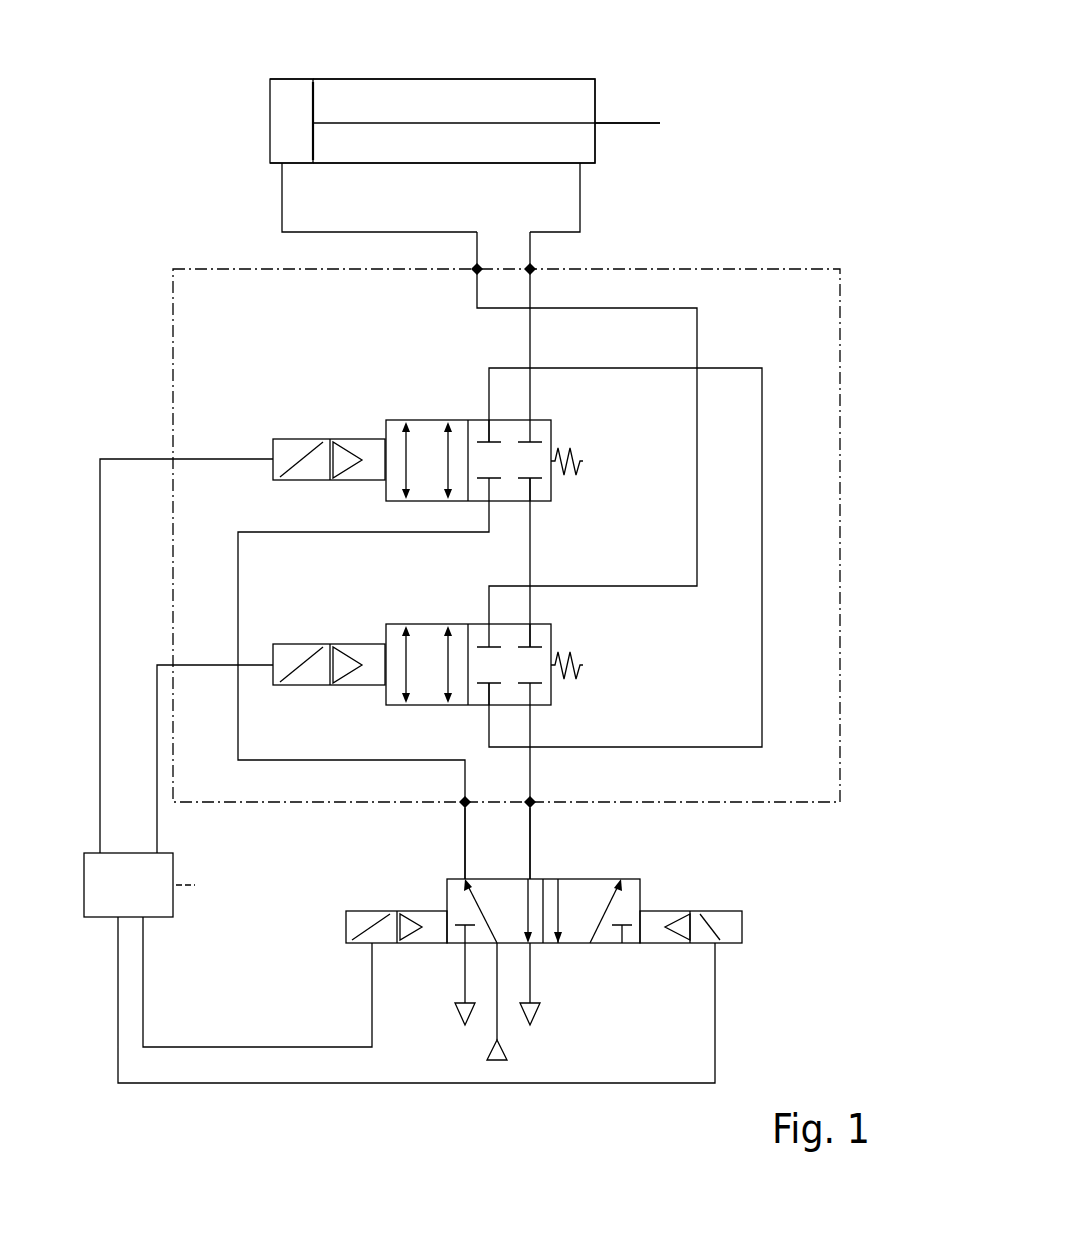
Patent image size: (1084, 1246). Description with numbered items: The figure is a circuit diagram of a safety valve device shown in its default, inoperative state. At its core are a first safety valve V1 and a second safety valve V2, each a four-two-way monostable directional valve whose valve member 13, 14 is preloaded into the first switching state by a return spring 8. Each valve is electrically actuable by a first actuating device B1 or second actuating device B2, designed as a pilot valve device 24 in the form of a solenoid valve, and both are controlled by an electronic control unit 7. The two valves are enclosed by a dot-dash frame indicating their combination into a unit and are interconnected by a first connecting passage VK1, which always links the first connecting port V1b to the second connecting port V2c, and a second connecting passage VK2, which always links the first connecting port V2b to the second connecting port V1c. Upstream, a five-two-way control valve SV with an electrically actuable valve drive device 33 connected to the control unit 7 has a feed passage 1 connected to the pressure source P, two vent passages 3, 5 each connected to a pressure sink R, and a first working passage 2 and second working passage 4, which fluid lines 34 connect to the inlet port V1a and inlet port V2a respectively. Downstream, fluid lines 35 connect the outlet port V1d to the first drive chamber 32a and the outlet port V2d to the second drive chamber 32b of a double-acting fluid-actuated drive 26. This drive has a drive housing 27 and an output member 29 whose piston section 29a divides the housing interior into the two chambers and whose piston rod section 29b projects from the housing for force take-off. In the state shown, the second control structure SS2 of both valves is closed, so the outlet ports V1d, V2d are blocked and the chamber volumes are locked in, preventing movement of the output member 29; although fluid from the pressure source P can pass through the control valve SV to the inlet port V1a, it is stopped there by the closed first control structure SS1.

The fluid-actuated drive 26 is at (570, 73).
The drive housing 27 is at (377, 80).
The output member 29 is at (646, 112).
The piston section 29a is at (308, 107).
The piston rod section 29b is at (618, 125).
The first drive chamber 32a is at (470, 88).
The second drive chamber 32b is at (290, 90).
The fluid lines 35 is at (282, 196).
The first valve member 13 is at (386, 421).
The valve member 14 is at (386, 702).
The pilot valve device 24 is at (313, 529).
The first actuating device B1 is at (318, 445).
The second actuating device B2 is at (318, 655).
The return spring 8 is at (583, 466).
The electronic control unit 7 is at (137, 900).
The valve drive device 33 is at (358, 913).
The fluid lines 34 is at (465, 843).
The control valve SV is at (602, 941).
The first safety valve V1 is at (629, 513).
The second safety valve V2 is at (620, 670).
The first connecting passage VK1 is at (762, 527).
The second connecting passage VK2 is at (533, 562).
The first control structure SS1 is at (487, 457).
The second control structure SS2 is at (530, 462).
The inlet port V1a is at (489, 508).
The first connecting port V1b is at (489, 424).
The second connecting port V1c is at (531, 508).
The outlet port V1d is at (530, 268).
The inlet port V2a is at (531, 712).
The first connecting port V2b is at (531, 625).
The second connecting port V2c is at (489, 712).
The outlet port V2d is at (477, 268).
The feed passage 1 is at (492, 991).
The first working passage 2 is at (456, 867).
The vent passage 3 is at (456, 973).
The second working passage 4 is at (522, 867).
The vent passage 5 is at (540, 973).
The pressure sink R is at (458, 1015).
The pressure source P is at (507, 1053).